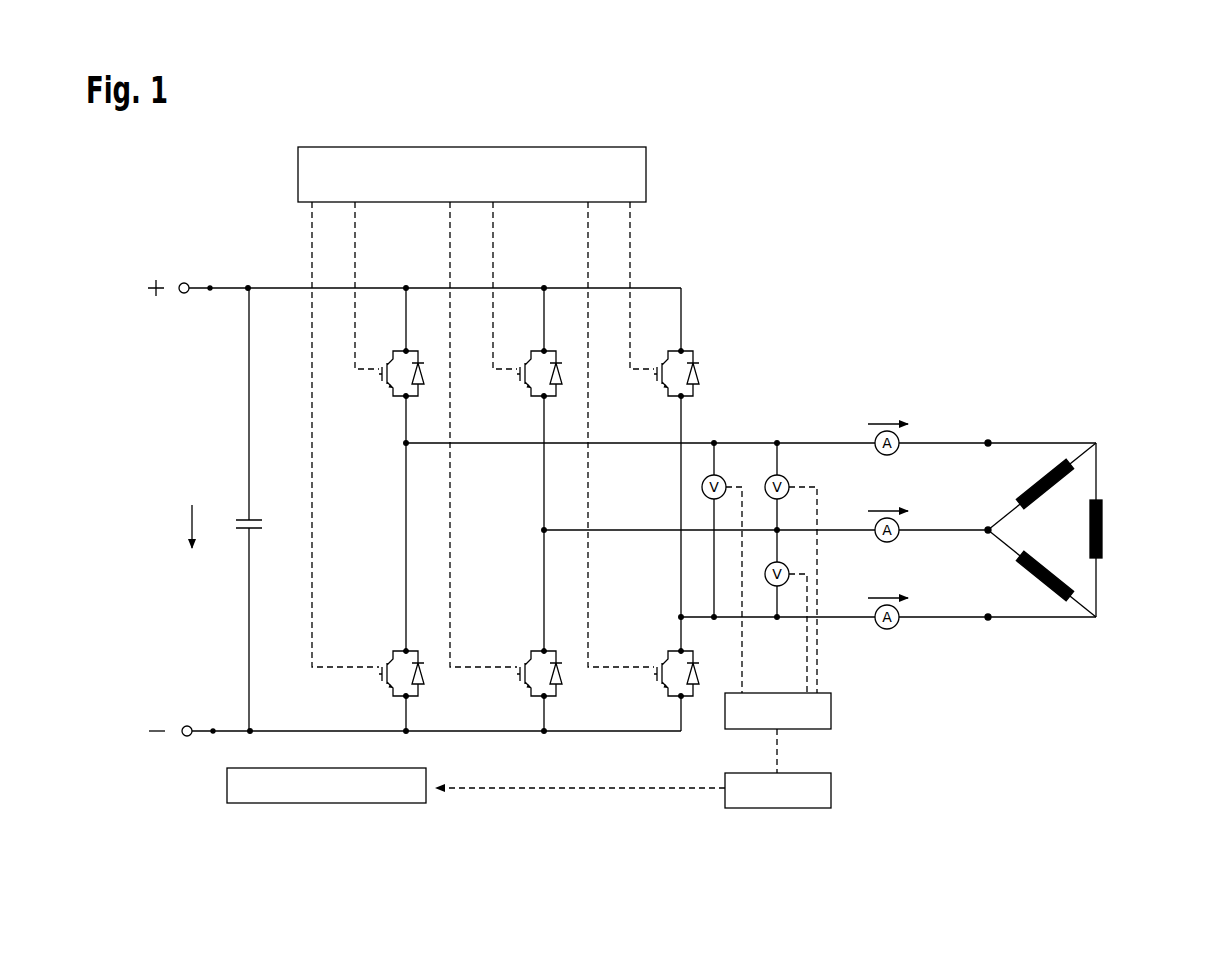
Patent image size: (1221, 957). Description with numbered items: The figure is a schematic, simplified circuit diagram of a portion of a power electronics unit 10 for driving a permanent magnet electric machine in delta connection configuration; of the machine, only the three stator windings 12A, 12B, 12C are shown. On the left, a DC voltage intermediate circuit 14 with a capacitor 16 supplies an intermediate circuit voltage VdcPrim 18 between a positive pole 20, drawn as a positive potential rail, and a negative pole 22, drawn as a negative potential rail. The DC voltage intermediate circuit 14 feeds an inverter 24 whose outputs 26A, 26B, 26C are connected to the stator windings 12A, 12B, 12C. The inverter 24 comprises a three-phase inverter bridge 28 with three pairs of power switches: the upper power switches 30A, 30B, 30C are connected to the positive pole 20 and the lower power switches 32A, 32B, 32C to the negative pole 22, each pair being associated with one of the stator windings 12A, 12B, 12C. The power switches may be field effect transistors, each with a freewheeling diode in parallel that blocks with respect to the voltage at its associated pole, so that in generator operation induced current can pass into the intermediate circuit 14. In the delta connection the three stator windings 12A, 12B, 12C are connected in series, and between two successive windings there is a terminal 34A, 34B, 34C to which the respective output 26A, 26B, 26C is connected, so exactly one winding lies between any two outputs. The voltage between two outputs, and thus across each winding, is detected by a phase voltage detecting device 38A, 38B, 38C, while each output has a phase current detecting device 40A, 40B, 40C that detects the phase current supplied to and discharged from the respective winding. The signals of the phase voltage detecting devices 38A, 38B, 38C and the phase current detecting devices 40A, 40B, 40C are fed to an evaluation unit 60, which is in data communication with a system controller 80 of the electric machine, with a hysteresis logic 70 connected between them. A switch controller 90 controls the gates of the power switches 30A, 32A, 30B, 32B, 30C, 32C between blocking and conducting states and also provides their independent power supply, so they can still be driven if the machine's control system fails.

The power electronics unit 10 is at (692, 120).
The first stator winding 12A is at (1055, 470).
The second stator winding 12B is at (1045, 588).
The third stator winding 12C is at (1104, 528).
The DC voltage intermediate circuit 14 is at (240, 250).
The capacitor 16 is at (245, 520).
The intermediate circuit voltage VdcPrim 18 is at (178, 510).
The positive pole 20 is at (184, 283).
The negative pole 22 is at (187, 737).
The inverter 24 is at (657, 258).
The first output of the inverter 26A is at (950, 440).
The second output of the inverter 26B is at (972, 535).
The third output of the inverter 26C is at (945, 620).
The three-phase inverter bridge 28 is at (395, 500).
The first power switch of the first pair 30A is at (393, 352).
The first power switch of the second pair 30B is at (531, 352).
The first power switch of the third pair 30C is at (668, 352).
The second power switch of the first pair 32A is at (393, 652).
The second power switch of the second pair 32B is at (531, 652).
The second power switch of the third pair 32C is at (668, 652).
The terminal 34A is at (990, 440).
The terminal 34B is at (985, 525).
The terminal 34C is at (990, 620).
The phase voltage detecting device 38A is at (780, 475).
The phase voltage detecting device 38B is at (772, 587).
The phase voltage detecting device 38C is at (716, 475).
The phase current detecting device 40A is at (878, 436).
The phase current detecting device 40B is at (878, 525).
The phase current detecting device 40C is at (878, 628).
The evaluation unit 60 is at (831, 708).
The hysteresis logic 70 is at (776, 810).
The system controller 80 is at (323, 805).
The switch controller 90 is at (582, 147).